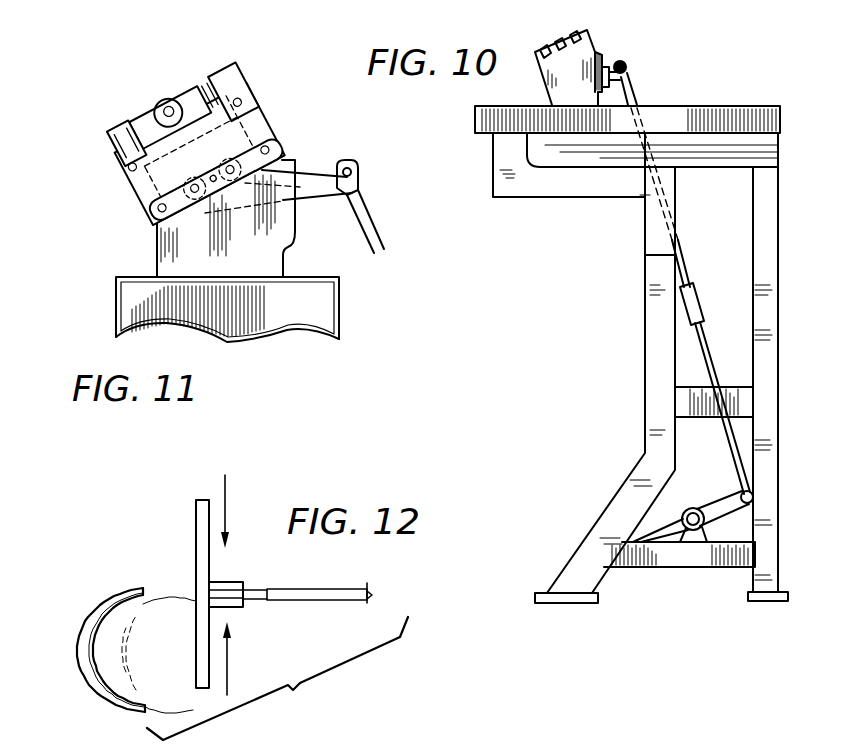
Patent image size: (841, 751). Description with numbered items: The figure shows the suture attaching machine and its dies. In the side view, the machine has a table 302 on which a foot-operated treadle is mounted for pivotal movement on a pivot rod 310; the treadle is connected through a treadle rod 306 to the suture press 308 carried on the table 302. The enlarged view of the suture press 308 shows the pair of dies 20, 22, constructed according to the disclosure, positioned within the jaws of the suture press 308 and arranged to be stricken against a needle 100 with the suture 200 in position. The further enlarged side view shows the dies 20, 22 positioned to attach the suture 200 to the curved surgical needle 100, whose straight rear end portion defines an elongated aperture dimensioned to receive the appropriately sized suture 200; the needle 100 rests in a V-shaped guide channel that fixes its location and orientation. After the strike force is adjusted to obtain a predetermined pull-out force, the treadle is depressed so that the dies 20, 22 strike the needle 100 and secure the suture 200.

In FIG. 11, the die 20 is at (134, 77).
In FIG. 12, the die 20 is at (195, 520).
In FIG. 11, the die 22 is at (165, 104).
In FIG. 12, the die 22 is at (210, 614).
In FIG. 12, the needle 100 is at (95, 600).
In FIG. 12, the suture 200 is at (335, 590).
In FIG. 10, the table 302 is at (747, 98).
In FIG. 10, the treadle rod 306 is at (713, 346).
In FIG. 10, the suture press 308 is at (613, 39).
In FIG. 11, the suture press 308 is at (194, 112).
In FIG. 10, the pivot rod 310 is at (690, 508).